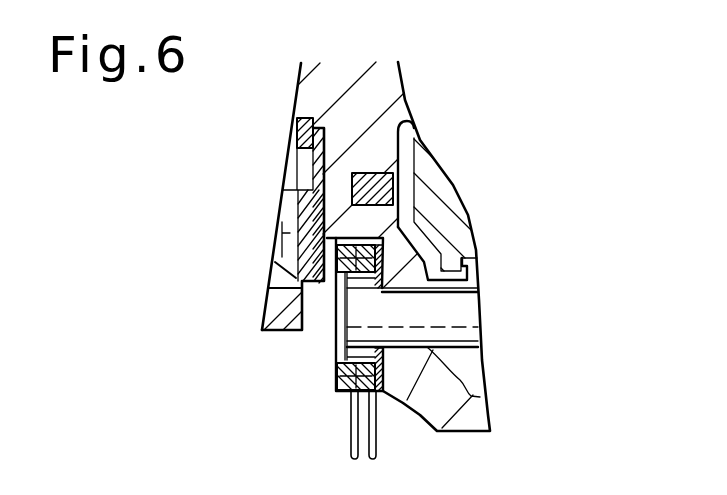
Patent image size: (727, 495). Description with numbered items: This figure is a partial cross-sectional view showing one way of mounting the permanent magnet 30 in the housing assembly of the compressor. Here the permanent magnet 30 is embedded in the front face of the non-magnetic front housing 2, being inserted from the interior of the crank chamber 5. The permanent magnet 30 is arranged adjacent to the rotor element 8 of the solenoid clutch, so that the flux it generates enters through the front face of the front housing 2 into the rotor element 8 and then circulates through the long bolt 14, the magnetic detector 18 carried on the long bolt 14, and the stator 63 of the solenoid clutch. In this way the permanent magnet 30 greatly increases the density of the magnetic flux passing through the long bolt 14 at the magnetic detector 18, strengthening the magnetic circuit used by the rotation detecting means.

The front housing 2 is at (388, 92).
The crank chamber 5 is at (472, 361).
The rotor element 8 is at (463, 233).
The long bolt 14 is at (465, 308).
The magnetic detector 18 is at (337, 377).
The permanent magnet 30 is at (372, 180).
The stator 63 is at (270, 285).